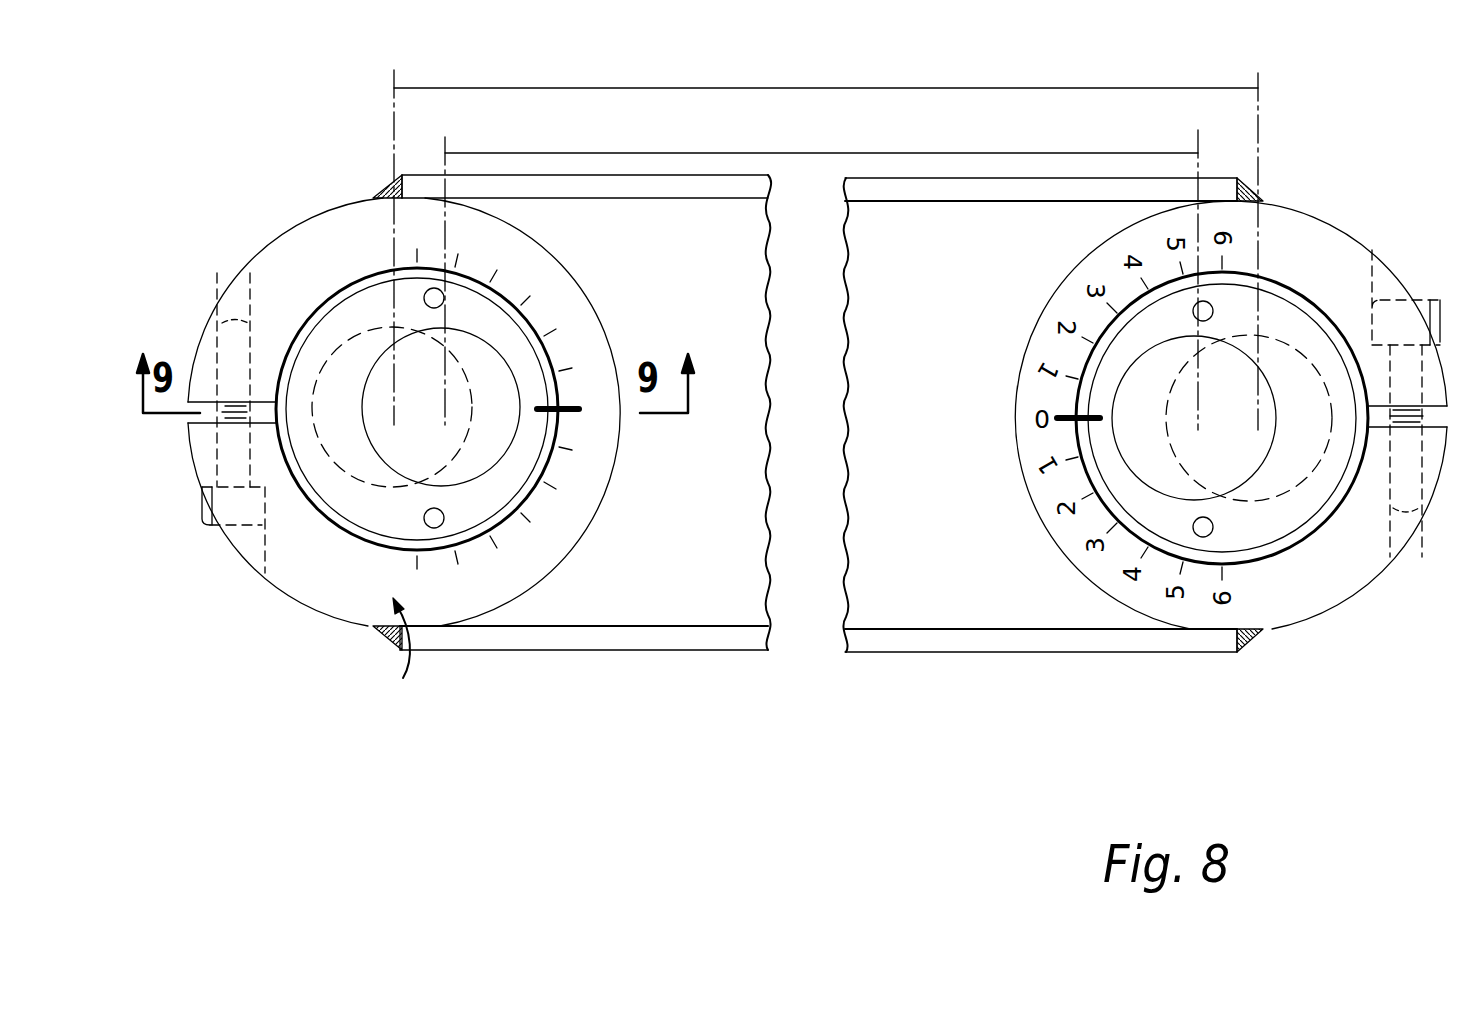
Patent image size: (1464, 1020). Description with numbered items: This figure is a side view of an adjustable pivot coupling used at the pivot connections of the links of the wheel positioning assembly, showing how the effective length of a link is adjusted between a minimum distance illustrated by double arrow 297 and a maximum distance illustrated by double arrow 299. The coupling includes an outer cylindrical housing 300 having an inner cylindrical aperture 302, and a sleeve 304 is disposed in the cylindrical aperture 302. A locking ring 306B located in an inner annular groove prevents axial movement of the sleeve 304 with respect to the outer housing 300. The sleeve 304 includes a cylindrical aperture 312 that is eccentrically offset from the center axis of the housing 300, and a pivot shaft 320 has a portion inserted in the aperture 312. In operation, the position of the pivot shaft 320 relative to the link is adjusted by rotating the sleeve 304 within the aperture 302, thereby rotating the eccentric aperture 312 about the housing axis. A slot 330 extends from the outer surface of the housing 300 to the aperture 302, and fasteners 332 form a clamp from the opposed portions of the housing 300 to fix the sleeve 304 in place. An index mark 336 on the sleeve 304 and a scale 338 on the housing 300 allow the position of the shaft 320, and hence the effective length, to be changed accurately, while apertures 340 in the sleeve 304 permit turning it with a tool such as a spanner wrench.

The double arrow 299 is at (577, 88).
The double arrow 297 is at (575, 153).
The outer cylindrical housing 300 is at (362, 204).
The inner cylindrical aperture 302 is at (374, 536).
The sleeve 304 is at (348, 285).
The locking ring 306B is at (545, 442).
The cylindrical aperture 312 is at (393, 462).
The pivot shaft 320 is at (467, 478).
The slot 330 is at (210, 403).
The fasteners 332 is at (218, 528).
The index mark 336 is at (562, 418).
The scale 338 is at (380, 658).
The apertures 340 is at (430, 292).